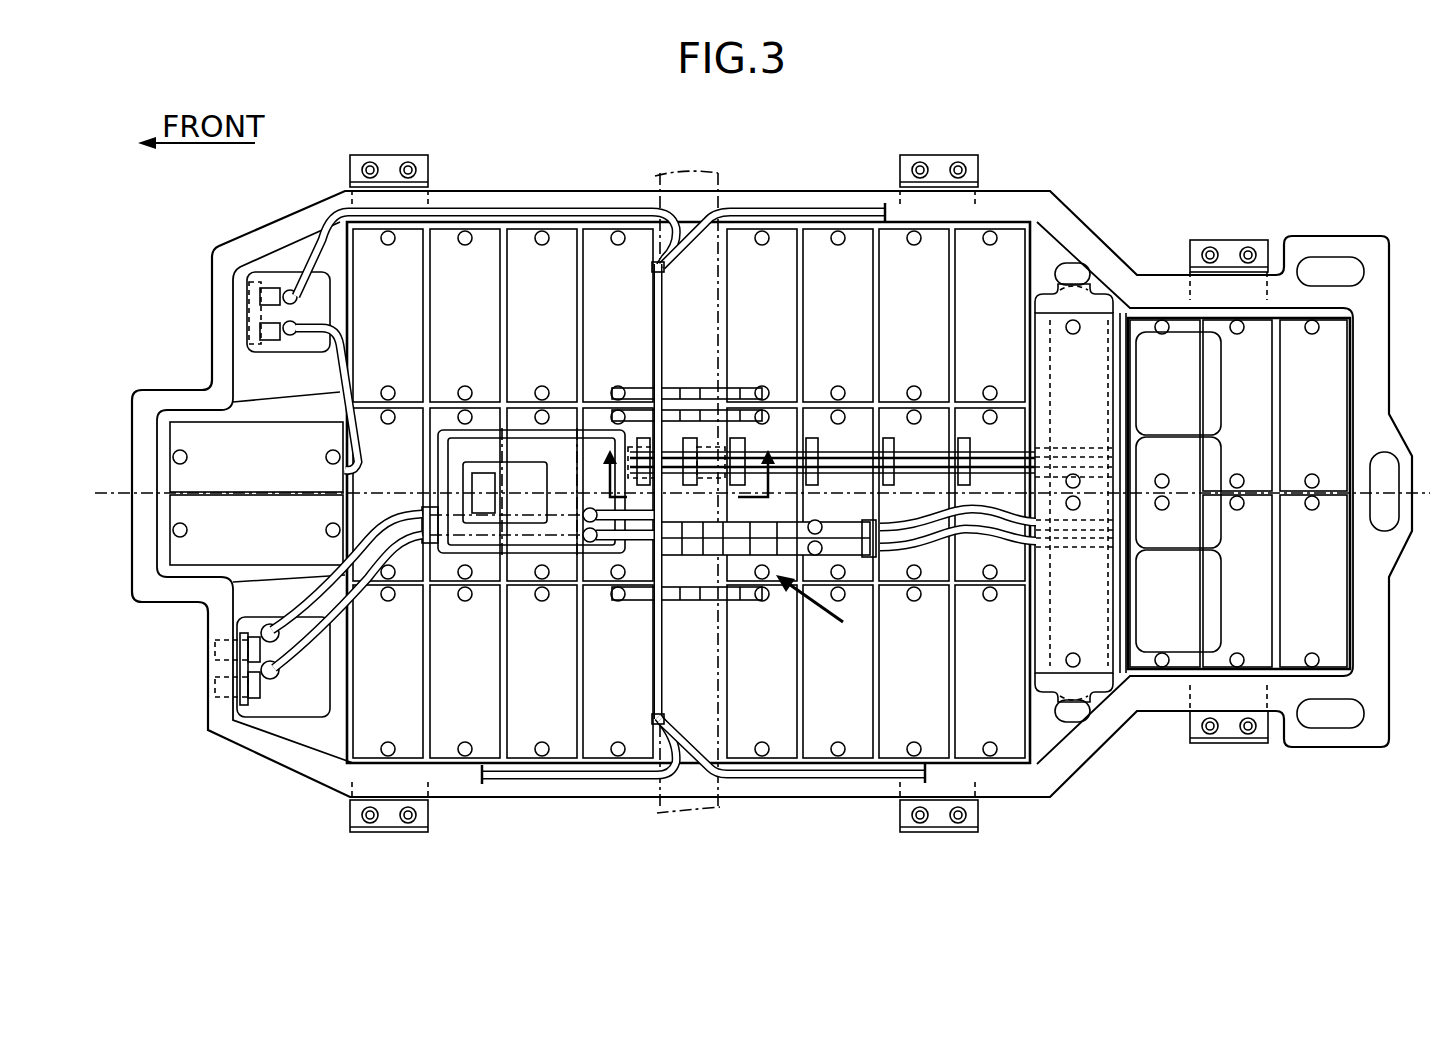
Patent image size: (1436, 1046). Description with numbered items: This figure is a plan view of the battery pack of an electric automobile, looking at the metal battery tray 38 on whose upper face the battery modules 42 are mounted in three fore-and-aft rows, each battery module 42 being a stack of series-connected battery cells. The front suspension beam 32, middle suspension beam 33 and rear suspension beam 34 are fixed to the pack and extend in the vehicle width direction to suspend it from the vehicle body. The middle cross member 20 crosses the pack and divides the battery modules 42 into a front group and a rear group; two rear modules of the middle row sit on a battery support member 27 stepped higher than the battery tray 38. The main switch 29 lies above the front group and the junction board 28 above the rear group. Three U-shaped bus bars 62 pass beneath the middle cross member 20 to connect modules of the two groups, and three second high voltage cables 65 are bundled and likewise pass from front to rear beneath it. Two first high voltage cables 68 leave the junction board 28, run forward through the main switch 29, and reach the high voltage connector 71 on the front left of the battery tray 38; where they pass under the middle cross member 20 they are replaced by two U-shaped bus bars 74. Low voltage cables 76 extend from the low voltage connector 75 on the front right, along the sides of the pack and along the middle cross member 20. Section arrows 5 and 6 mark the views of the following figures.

The middle cross member 20 is at (718, 173).
The battery support member 27 is at (1097, 303).
The junction board 28 is at (1165, 506).
The main switch 29 is at (515, 506).
The front suspension beam 32 is at (392, 165).
The middle suspension beam 33 is at (945, 165).
The rear suspension beam 34 is at (1228, 255).
The battery tray 38 is at (597, 186).
The battery module 42 is at (760, 493).
The bus bar 62 is at (704, 414).
The second high voltage cable 65 is at (855, 470).
The first high voltage cable 68 is at (348, 568).
The high voltage connector 71 is at (215, 652).
The bus bar 74 is at (665, 572).
The low voltage connector 75 is at (258, 330).
The low voltage cable 76 is at (527, 212).
The view direction of FIG. 5 is at (822, 610).
The section line of FIG. 6 is at (687, 457).